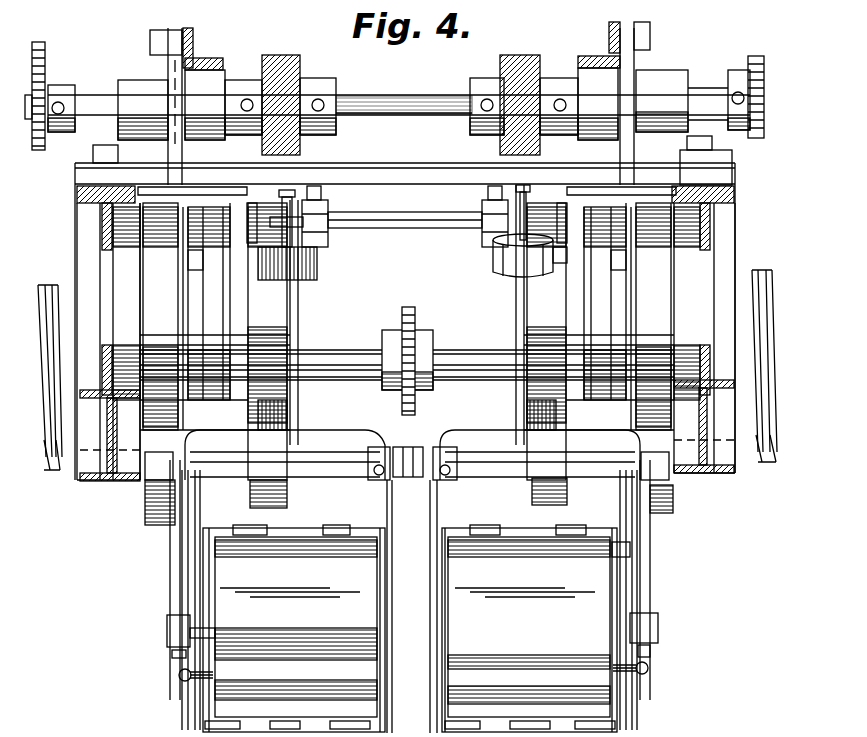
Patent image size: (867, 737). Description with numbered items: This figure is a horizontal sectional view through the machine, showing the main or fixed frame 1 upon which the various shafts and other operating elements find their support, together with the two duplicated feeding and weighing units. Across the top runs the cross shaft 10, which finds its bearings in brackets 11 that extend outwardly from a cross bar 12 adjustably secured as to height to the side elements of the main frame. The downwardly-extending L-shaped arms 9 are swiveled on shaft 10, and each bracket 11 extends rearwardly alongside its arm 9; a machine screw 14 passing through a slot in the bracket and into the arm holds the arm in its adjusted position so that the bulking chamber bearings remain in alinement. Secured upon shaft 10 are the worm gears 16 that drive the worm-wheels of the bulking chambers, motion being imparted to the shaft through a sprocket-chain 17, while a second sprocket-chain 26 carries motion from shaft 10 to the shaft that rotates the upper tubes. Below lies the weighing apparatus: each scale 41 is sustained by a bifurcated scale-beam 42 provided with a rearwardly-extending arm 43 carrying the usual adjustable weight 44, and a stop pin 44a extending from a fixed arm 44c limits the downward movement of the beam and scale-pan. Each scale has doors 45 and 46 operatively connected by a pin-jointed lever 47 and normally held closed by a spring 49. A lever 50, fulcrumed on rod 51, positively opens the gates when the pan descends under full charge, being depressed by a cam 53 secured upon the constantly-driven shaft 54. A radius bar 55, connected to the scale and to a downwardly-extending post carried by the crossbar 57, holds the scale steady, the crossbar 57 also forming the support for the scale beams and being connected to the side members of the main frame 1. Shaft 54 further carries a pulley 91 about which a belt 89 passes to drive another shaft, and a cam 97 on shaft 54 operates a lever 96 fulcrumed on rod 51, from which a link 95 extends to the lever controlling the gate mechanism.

The main frame 1 is at (93, 265).
The L-shaped arm 9 is at (206, 60).
The cross shaft 10 is at (397, 97).
The bracket 11 is at (165, 148).
The cross bar 12 is at (394, 164).
The machine screw 14 is at (150, 40).
The worm gear 16 is at (286, 55).
The sprocket-chain 17 is at (762, 132).
The sprocket-chain 26 is at (45, 75).
The scale 41 is at (215, 630).
The bifurcated scale-beam 42 is at (330, 438).
The rearwardly-extending arm 43 is at (290, 298).
The adjustable weight 44 is at (317, 268).
The stop pin 44a is at (280, 215).
The fixed arm 44c is at (330, 206).
The door 45 is at (532, 668).
The door 46 is at (530, 565).
The pin-jointed lever 47 is at (178, 664).
The spring 49 is at (178, 677).
The lever 50 is at (184, 280).
The rod 51 is at (393, 229).
The cam 53 is at (407, 316).
The constantly-driven shaft 54 is at (341, 349).
The radius bar 55 is at (200, 507).
The crossbar 57 is at (415, 447).
The belt 89 is at (52, 466).
The pulley 91 is at (58, 300).
The link 95 is at (288, 392).
The lever 96 is at (222, 312).
The cam 97 is at (407, 341).